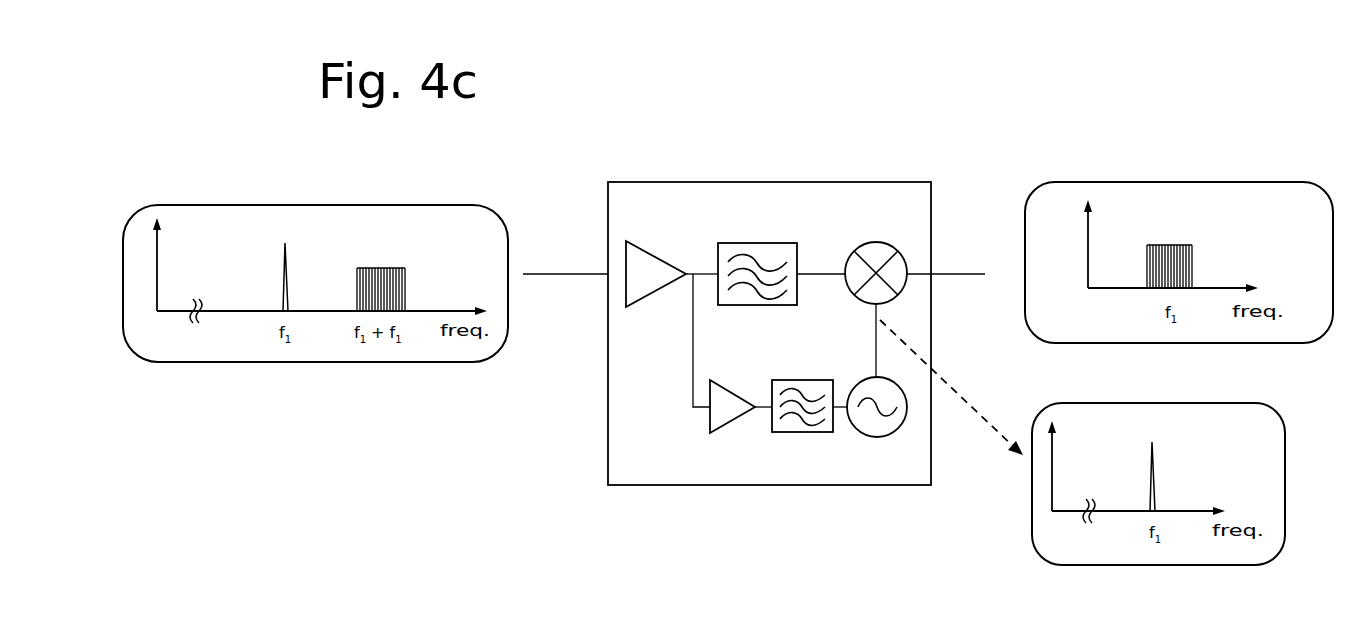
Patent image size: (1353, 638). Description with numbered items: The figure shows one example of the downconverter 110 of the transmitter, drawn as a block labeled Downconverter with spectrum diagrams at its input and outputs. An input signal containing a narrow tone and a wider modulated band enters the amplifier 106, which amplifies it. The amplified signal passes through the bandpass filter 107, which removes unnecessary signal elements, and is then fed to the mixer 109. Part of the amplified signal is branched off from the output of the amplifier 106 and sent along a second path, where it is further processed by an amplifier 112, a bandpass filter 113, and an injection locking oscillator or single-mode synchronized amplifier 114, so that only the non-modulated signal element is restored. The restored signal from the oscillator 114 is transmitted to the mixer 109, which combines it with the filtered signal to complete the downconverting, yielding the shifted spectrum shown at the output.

The amplifier 106 is at (643, 307).
The bandpass filter 107 is at (745, 305).
The mixer 109 is at (908, 287).
The downconverter 110 is at (882, 485).
The amplifier 112 is at (722, 433).
The bandpass filter 113 is at (800, 433).
The injection locking oscillator 114 is at (868, 437).